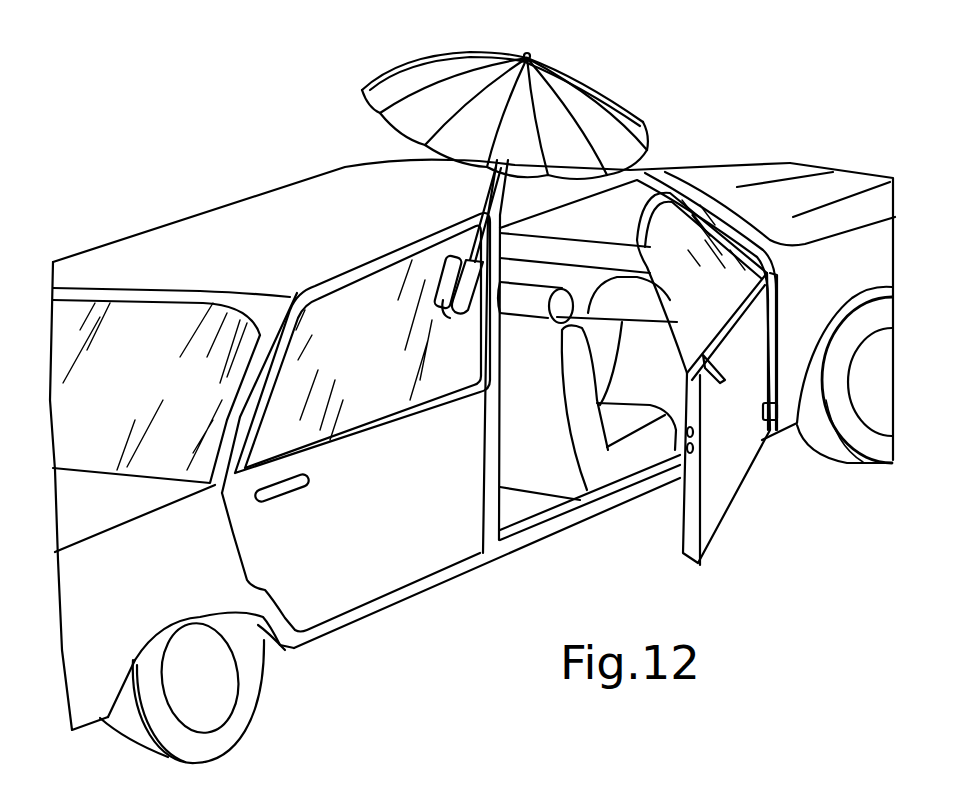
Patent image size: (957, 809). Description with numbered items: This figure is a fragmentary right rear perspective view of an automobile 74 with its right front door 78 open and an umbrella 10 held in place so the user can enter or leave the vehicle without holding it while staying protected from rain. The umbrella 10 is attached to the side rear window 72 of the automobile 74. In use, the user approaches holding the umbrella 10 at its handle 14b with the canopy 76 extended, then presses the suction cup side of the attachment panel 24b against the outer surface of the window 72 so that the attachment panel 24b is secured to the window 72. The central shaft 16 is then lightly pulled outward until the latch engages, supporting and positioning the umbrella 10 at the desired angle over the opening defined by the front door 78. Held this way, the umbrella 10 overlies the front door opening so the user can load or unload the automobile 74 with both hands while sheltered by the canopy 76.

The umbrella 10 is at (364, 42).
The central shaft 16 is at (485, 205).
The handle 14b is at (470, 303).
The attachment panel 24b is at (441, 307).
The side rear window 72 is at (372, 333).
The automobile 74 is at (222, 210).
The canopy 76 is at (453, 60).
The front door 78 is at (735, 502).